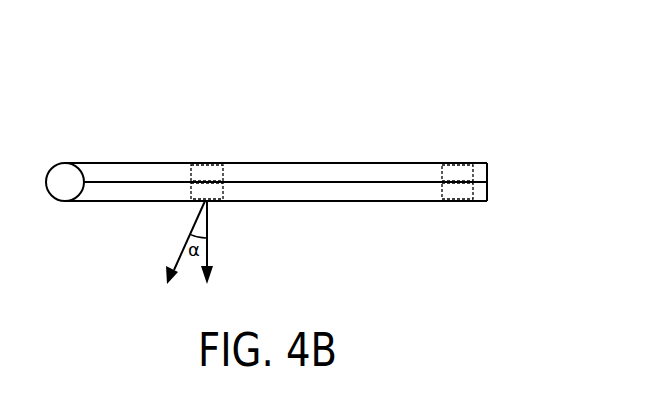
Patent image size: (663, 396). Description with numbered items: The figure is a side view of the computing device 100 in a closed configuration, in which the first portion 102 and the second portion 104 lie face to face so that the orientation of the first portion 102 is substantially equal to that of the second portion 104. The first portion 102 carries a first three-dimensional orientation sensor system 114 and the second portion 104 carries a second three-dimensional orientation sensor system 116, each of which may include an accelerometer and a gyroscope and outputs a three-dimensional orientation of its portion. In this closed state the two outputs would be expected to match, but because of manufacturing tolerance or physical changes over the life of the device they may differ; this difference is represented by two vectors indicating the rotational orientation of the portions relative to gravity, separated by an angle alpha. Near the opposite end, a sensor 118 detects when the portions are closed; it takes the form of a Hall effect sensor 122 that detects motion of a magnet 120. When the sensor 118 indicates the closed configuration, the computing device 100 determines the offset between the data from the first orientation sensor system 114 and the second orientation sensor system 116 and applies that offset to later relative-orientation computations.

The computing device 100 is at (314, 60).
The first portion 102 is at (488, 170).
The second portion 104 is at (488, 195).
The first three-dimensional orientation sensor system 114 is at (224, 170).
The second three-dimensional orientation sensor system 116 is at (224, 194).
The sensor 118 is at (432, 175).
The magnet 120 is at (441, 172).
The Hall effect sensor 122 is at (441, 193).